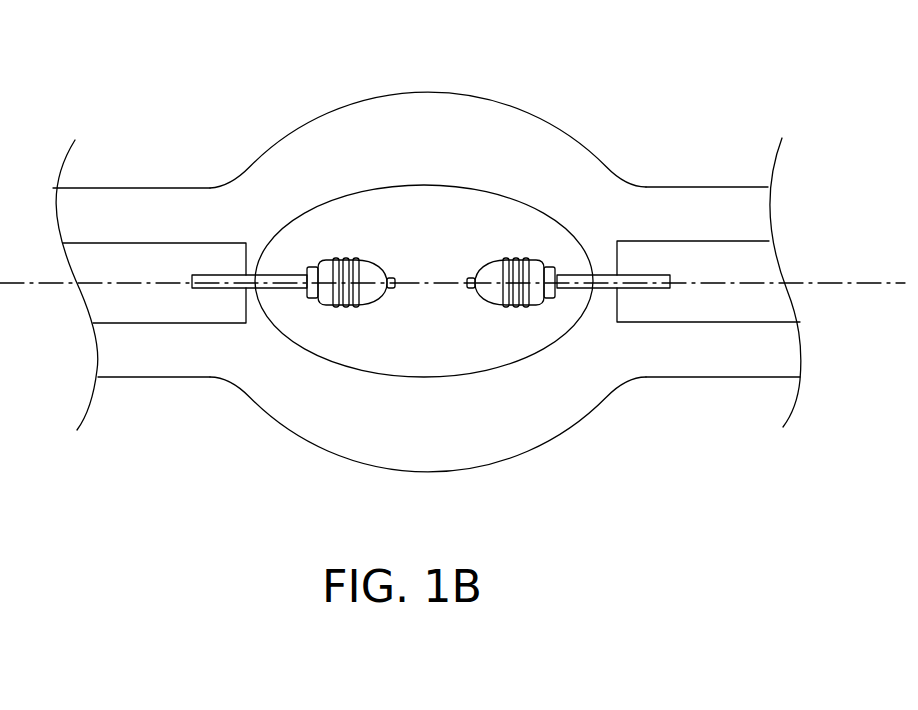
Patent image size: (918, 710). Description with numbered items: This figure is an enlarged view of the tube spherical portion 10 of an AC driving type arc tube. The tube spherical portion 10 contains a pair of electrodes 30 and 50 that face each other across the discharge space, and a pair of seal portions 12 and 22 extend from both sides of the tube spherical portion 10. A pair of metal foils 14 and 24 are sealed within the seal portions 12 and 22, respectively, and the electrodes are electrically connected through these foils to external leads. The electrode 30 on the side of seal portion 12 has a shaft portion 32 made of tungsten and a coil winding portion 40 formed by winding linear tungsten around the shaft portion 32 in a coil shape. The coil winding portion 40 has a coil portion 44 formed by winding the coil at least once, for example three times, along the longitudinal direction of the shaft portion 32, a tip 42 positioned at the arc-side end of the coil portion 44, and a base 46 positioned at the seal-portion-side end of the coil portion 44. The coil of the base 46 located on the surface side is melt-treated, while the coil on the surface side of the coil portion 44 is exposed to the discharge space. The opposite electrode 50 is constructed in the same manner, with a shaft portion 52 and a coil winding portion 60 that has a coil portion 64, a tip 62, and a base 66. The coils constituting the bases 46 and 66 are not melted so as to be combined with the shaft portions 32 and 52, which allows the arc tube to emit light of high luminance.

The tube spherical portion 10 is at (434, 74).
The seal portion 12 is at (176, 150).
The metal foil 14 is at (105, 243).
The seal portion 22 is at (728, 134).
The metal foil 24 is at (652, 241).
The electrode 30 is at (409, 258).
The shaft portion 32 is at (258, 290).
The coil winding portion 40 is at (349, 291).
The tip 42 is at (397, 303).
The coil portion 44 is at (333, 303).
The base 46 is at (331, 303).
The electrode 50 is at (456, 300).
The shaft portion 52 is at (612, 290).
The coil winding portion 60 is at (510, 294).
The tip 62 is at (502, 303).
The coil portion 64 is at (529, 303).
The base 66 is at (559, 303).